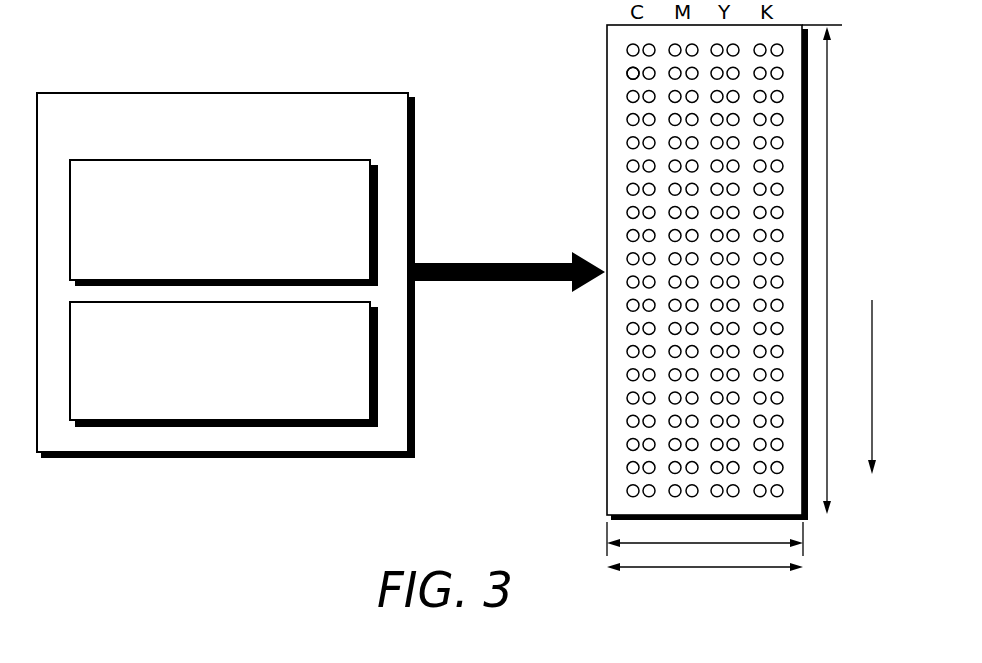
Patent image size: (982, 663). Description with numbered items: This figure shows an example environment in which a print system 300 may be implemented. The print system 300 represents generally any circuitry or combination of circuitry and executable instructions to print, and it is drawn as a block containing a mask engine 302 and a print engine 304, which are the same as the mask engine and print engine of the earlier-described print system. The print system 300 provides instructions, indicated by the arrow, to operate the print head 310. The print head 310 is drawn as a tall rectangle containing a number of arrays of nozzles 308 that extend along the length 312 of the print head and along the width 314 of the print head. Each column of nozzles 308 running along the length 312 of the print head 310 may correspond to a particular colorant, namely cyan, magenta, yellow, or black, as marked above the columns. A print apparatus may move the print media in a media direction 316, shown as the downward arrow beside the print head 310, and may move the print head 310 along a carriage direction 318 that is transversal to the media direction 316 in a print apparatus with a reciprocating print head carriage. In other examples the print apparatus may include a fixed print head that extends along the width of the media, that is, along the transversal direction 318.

The print system 300 is at (226, 275).
The mask engine 302 is at (224, 223).
The print engine 304 is at (224, 364).
The nozzles 308 is at (627, 73).
The print head 310 is at (607, 128).
The length of the print head 312 is at (827, 150).
The width of the print head 314 is at (607, 531).
The media direction 316 is at (872, 476).
The carriage direction 318 is at (803, 567).